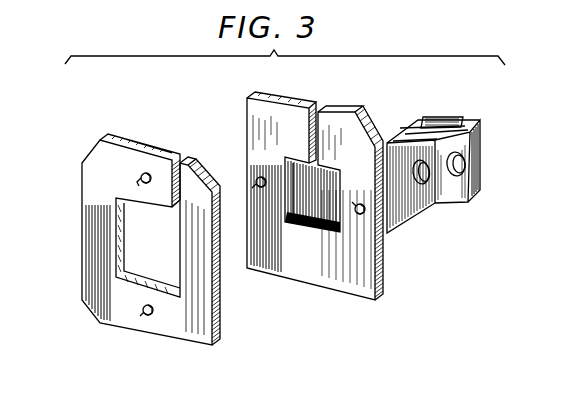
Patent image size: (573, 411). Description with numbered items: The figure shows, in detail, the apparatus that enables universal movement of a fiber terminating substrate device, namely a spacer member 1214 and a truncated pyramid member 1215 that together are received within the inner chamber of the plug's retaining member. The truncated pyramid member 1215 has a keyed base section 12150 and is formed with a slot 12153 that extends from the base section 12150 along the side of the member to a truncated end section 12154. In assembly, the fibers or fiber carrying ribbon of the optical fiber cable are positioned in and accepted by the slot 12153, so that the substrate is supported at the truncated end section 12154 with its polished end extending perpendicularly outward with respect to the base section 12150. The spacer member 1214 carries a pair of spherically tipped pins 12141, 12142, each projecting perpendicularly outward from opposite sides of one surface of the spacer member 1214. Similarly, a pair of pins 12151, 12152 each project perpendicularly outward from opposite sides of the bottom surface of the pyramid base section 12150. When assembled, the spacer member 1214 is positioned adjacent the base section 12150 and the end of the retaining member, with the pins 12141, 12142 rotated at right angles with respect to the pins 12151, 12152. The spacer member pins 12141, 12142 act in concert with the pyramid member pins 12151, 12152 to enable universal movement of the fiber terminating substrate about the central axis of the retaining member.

The spacer member 1214 is at (177, 338).
The spherically tipped pin 12141 is at (141, 176).
The spherically tipped pin 12142 is at (144, 313).
The truncated pyramid member 1215 is at (411, 88).
The keyed base section 12150 is at (308, 278).
The pin 12151 is at (363, 215).
The pin 12152 is at (255, 181).
The slot 12153 is at (308, 131).
The truncated end section 12154 is at (456, 189).